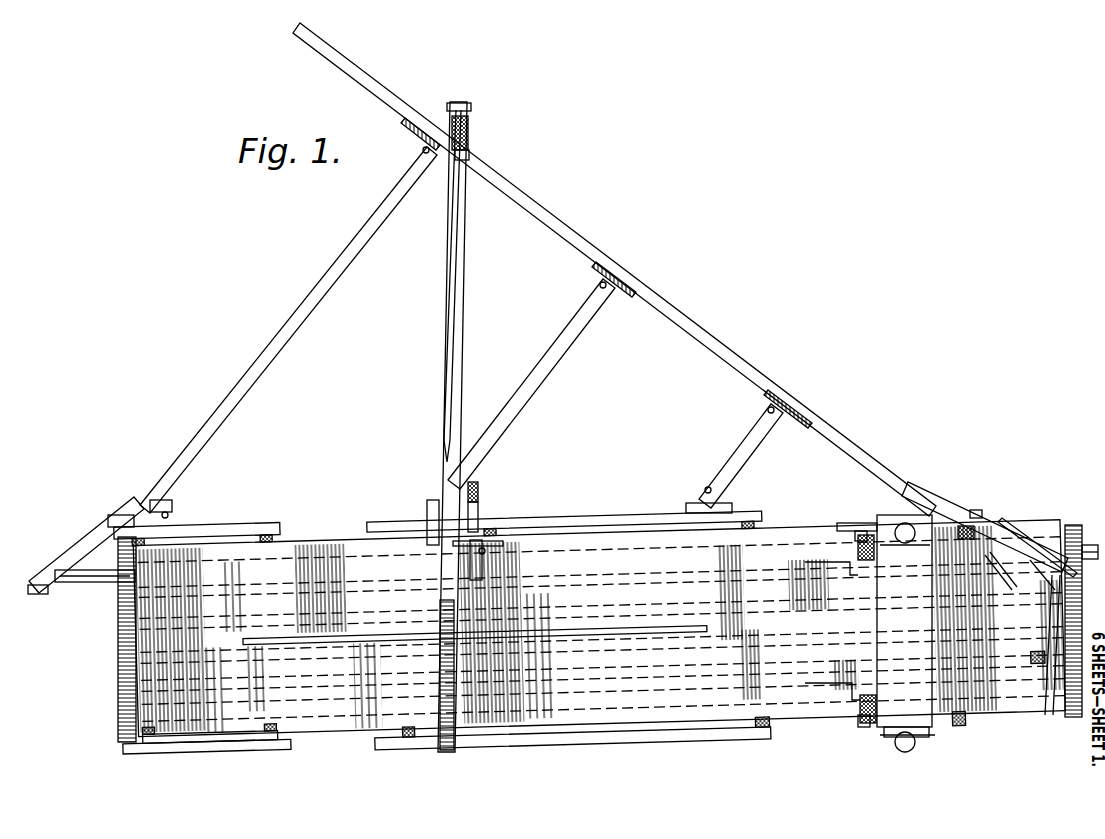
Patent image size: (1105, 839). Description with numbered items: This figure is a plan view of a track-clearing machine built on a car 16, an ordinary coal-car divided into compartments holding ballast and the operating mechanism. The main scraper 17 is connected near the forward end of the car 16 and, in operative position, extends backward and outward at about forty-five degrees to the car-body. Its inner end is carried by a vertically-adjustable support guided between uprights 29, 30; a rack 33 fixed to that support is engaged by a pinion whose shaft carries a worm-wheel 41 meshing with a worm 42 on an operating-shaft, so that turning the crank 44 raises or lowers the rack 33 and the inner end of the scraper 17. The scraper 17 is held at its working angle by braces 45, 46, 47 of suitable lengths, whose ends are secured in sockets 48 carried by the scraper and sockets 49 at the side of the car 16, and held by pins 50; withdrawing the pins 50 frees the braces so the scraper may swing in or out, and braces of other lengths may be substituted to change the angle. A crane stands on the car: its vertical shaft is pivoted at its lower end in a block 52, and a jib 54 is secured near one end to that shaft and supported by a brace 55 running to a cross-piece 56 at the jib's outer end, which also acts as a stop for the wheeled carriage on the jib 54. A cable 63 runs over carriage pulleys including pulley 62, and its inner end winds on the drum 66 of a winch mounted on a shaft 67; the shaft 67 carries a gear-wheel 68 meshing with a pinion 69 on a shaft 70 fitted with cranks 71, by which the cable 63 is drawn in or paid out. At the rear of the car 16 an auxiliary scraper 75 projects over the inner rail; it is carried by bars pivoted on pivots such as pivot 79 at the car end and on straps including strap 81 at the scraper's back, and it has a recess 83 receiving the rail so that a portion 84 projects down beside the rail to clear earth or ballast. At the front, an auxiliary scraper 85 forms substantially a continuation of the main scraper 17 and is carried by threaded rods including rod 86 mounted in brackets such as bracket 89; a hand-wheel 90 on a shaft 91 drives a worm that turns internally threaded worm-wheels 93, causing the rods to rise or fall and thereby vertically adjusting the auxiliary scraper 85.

The car 16 is at (590, 629).
The main scraper 17 is at (714, 341).
The upright 29 is at (921, 643).
The upright 30 is at (882, 525).
The rack 33 is at (897, 555).
The worm-wheel 41 is at (838, 524).
The worm 42 is at (857, 546).
The crank 44 is at (826, 585).
The brace 45 is at (752, 452).
The brace 46 is at (540, 382).
The brace 47 is at (88, 592).
The socket 48 is at (420, 133).
The socket 49 is at (158, 502).
The pin 50 is at (423, 149).
The block 52 is at (462, 705).
The jib 54 is at (462, 312).
The brace 55 is at (463, 273).
The cross-piece 56 is at (471, 106).
The pulley 62 is at (470, 160).
The cable 63 is at (469, 130).
The drum 66 is at (564, 522).
The shaft 67 is at (480, 508).
The gear-wheel 68 is at (480, 488).
The pinion 69 is at (485, 553).
The shaft 70 is at (469, 566).
The crank 71 is at (505, 545).
The auxiliary scraper 75 is at (78, 548).
The pivot 79 is at (118, 520).
The strap 81 is at (42, 594).
The recess 83 is at (966, 539).
The projecting portion 84 is at (1005, 520).
The auxiliary scraper 85 is at (950, 493).
The rod 86 is at (1068, 527).
The bracket 89 is at (1042, 578).
The hand-wheel 90 is at (1054, 586).
The shaft 91 is at (1000, 560).
The worm-wheel 93 is at (1037, 524).